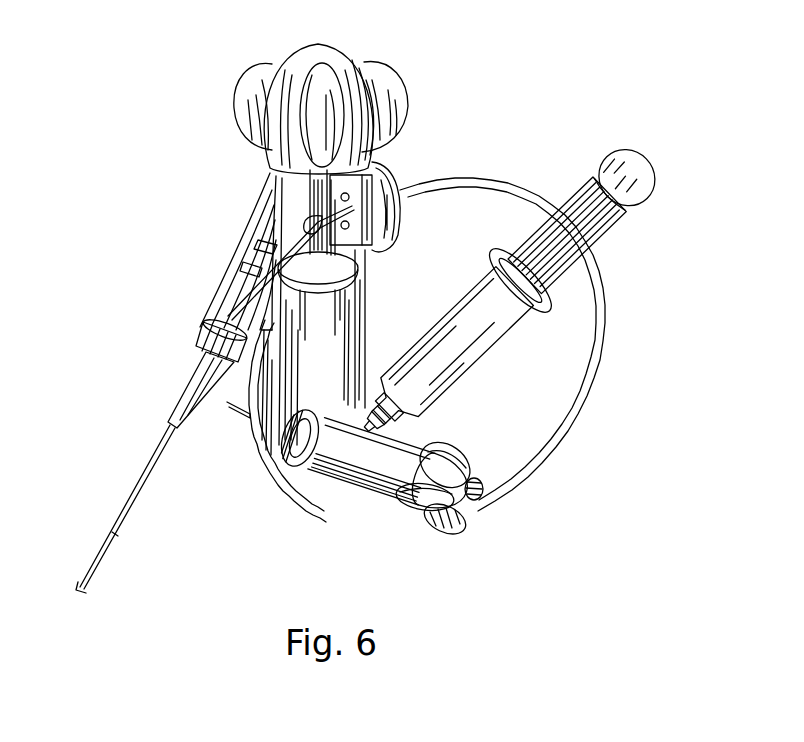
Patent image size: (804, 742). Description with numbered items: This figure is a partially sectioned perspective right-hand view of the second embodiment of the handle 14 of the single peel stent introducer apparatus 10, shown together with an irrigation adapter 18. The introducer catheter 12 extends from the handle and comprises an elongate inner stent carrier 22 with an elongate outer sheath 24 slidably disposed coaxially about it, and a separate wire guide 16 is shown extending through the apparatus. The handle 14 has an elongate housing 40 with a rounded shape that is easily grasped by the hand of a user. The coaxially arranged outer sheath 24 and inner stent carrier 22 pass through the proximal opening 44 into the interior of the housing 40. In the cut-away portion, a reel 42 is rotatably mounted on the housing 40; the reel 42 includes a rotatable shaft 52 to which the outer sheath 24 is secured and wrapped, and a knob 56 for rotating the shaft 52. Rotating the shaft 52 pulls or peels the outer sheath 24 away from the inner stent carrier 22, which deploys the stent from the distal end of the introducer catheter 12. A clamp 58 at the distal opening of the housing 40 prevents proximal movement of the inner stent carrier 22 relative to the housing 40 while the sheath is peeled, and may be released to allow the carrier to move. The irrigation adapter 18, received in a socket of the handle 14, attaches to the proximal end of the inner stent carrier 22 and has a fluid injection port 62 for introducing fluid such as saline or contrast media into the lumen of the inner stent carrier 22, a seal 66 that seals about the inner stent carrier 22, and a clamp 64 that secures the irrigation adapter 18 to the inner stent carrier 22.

The single peel stent introducer apparatus 10 is at (505, 67).
The introducer catheter 12 is at (158, 443).
The handle 14 is at (505, 120).
The wire guide 16 is at (242, 412).
The irrigation adapter 18 is at (362, 533).
The inner stent carrier 22 is at (596, 378).
The outer sheath 24 is at (290, 285).
The housing 40 is at (372, 314).
The reel 42 is at (305, 233).
The proximal opening 44 is at (207, 338).
The rotatable shaft 52 is at (335, 188).
The knob 56 is at (240, 124).
The clamp 58 is at (382, 213).
The fluid injection port 62 is at (397, 426).
The clamp 64 is at (463, 517).
The seal 66 is at (413, 507).